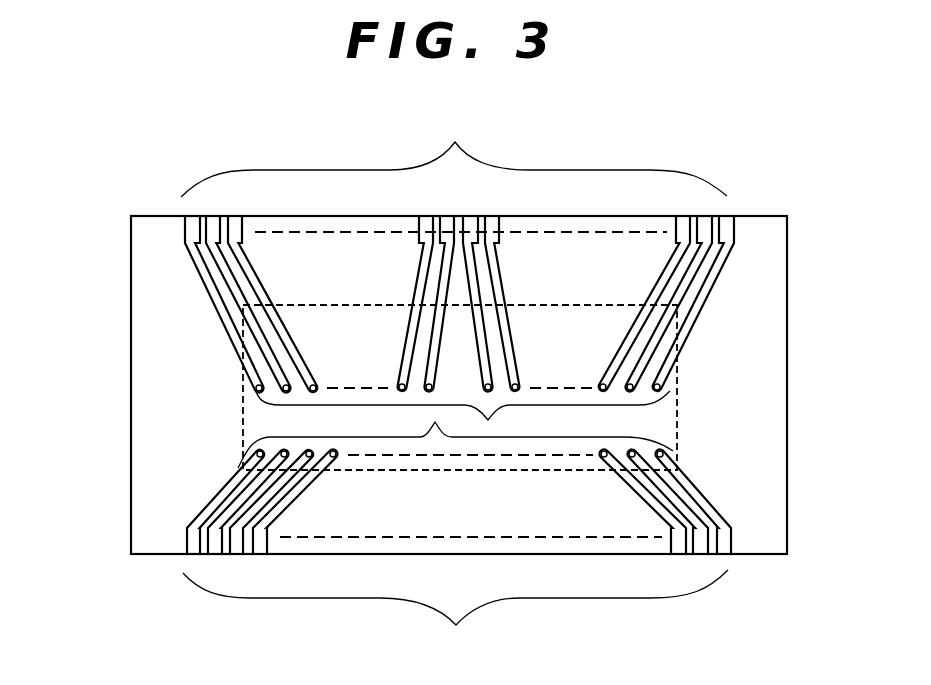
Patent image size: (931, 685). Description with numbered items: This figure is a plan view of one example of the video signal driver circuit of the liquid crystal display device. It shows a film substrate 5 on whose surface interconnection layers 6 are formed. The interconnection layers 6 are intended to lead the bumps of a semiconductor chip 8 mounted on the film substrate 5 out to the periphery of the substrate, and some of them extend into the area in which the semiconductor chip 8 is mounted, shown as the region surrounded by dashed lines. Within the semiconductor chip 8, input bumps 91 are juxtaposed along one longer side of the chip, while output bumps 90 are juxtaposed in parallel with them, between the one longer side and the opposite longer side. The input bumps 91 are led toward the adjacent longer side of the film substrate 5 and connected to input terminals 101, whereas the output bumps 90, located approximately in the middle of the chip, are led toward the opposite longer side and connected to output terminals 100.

The film substrate 5 is at (787, 387).
The interconnection layers 6 is at (203, 282).
The semiconductor chip 8 is at (242, 388).
The output bumps 90 is at (462, 412).
The input bumps 91 is at (455, 439).
The output terminals 100 is at (454, 154).
The input terminals 101 is at (455, 617).